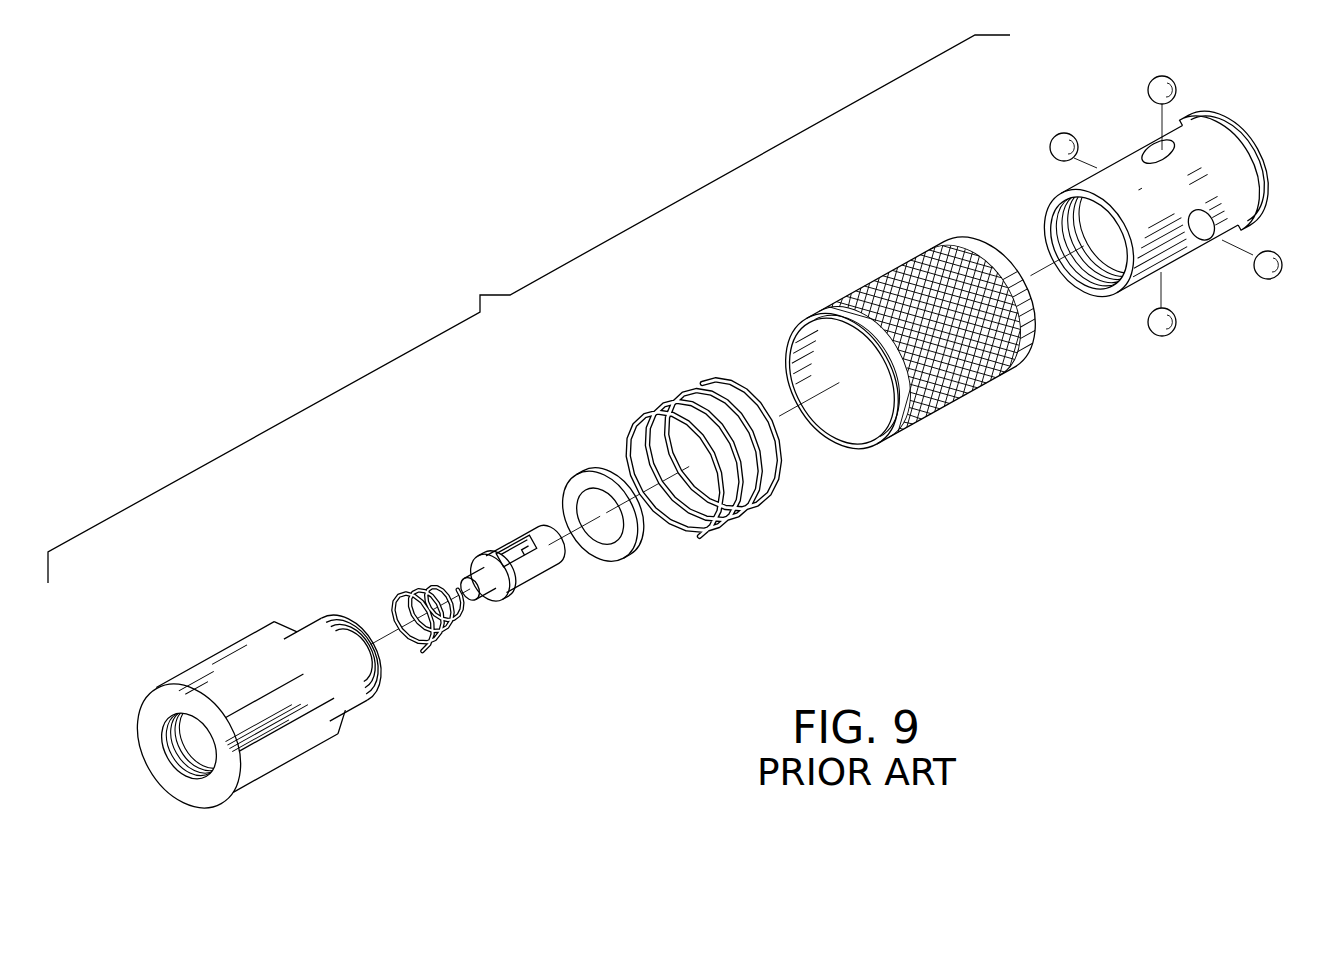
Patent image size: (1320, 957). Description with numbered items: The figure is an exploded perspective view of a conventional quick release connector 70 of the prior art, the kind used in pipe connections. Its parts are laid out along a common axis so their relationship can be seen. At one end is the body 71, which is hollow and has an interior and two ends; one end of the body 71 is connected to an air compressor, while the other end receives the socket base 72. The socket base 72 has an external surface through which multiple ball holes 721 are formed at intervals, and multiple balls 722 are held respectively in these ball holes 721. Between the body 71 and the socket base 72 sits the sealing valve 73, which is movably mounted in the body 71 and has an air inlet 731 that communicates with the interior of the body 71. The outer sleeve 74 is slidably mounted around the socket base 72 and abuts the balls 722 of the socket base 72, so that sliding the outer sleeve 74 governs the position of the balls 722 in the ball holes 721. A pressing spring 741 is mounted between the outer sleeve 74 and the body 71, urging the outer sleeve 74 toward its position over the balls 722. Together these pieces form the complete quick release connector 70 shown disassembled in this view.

The quick release connector 70 is at (668, 358).
The body 71 is at (303, 735).
The socket base 72 is at (1165, 202).
The ball holes 721 is at (1173, 163).
The balls 722 is at (1258, 268).
The sealing valve 73 is at (496, 551).
The air inlet 731 is at (510, 546).
The outer sleeve 74 is at (950, 393).
The pressing spring 741 is at (762, 493).